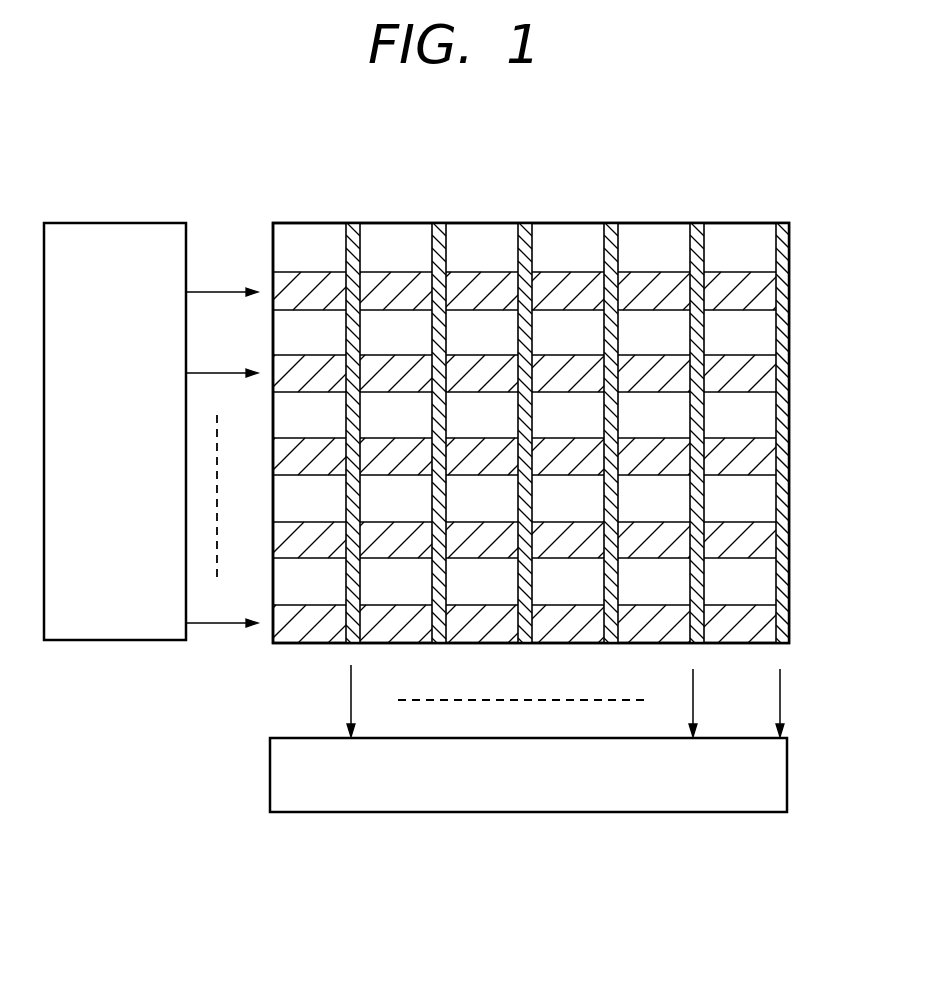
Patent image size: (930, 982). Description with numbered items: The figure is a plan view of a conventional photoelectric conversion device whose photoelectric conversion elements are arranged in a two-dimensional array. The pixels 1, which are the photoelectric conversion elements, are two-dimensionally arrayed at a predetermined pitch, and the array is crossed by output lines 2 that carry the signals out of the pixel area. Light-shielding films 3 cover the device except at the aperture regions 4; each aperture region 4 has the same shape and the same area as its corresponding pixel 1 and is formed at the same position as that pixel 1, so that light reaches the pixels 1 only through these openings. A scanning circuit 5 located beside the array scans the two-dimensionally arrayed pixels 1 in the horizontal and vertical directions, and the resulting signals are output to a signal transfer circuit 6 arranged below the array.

The pixel 1 is at (540, 395).
The output line 2 is at (790, 258).
The light-shielding film 3 is at (763, 383).
The aperture region 4 is at (531, 433).
The scanning circuit 5 is at (150, 223).
The signal transfer circuit 6 is at (788, 762).